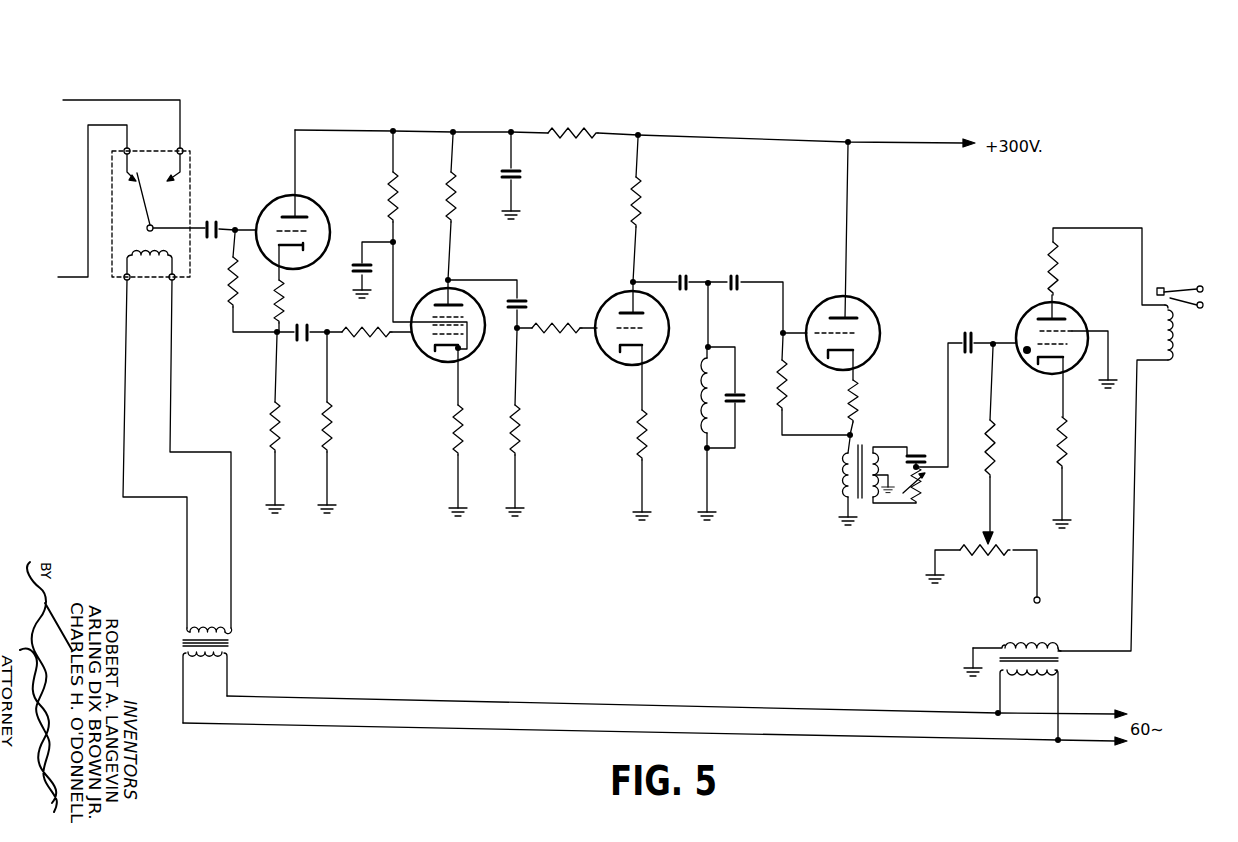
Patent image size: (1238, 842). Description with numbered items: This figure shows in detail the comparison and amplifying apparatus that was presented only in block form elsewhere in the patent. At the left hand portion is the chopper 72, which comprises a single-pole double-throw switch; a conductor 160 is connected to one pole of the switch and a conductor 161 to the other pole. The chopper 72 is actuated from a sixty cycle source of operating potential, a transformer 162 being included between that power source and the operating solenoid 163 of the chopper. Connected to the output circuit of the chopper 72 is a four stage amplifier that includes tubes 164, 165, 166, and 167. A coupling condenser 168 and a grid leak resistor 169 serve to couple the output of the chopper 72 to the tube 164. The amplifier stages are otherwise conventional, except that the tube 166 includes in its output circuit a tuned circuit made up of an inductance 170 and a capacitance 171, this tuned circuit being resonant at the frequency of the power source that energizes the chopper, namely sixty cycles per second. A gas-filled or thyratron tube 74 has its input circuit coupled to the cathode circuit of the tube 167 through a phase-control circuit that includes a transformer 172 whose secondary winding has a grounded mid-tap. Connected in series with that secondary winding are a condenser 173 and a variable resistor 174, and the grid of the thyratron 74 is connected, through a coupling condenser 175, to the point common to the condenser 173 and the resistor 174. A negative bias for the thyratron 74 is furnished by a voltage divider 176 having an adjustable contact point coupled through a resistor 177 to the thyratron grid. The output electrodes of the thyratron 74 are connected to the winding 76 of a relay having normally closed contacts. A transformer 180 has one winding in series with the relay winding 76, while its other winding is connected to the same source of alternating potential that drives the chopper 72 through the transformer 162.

The conductor 160 is at (150, 100).
The conductor 161 is at (72, 279).
The chopper 72 is at (192, 175).
The operating solenoid 163 is at (172, 256).
The transformer 162 is at (232, 643).
The coupling condenser 168 is at (220, 221).
The tube 164 is at (327, 213).
The grid leak resistor 169 is at (238, 280).
The tube 165 is at (466, 293).
The tube 166 is at (661, 304).
The tube 167 is at (877, 317).
The inductance 170 is at (700, 400).
The capacitance 171 is at (740, 403).
The transformer 172 is at (863, 445).
The condenser 173 is at (918, 453).
The variable resistor 174 is at (922, 490).
The coupling condenser 175 is at (972, 334).
The voltage divider 176 is at (995, 555).
The resistor 177 is at (997, 440).
The thyratron 74 is at (1077, 308).
The relay winding 76 is at (1175, 336).
The transformer 180 is at (1060, 662).